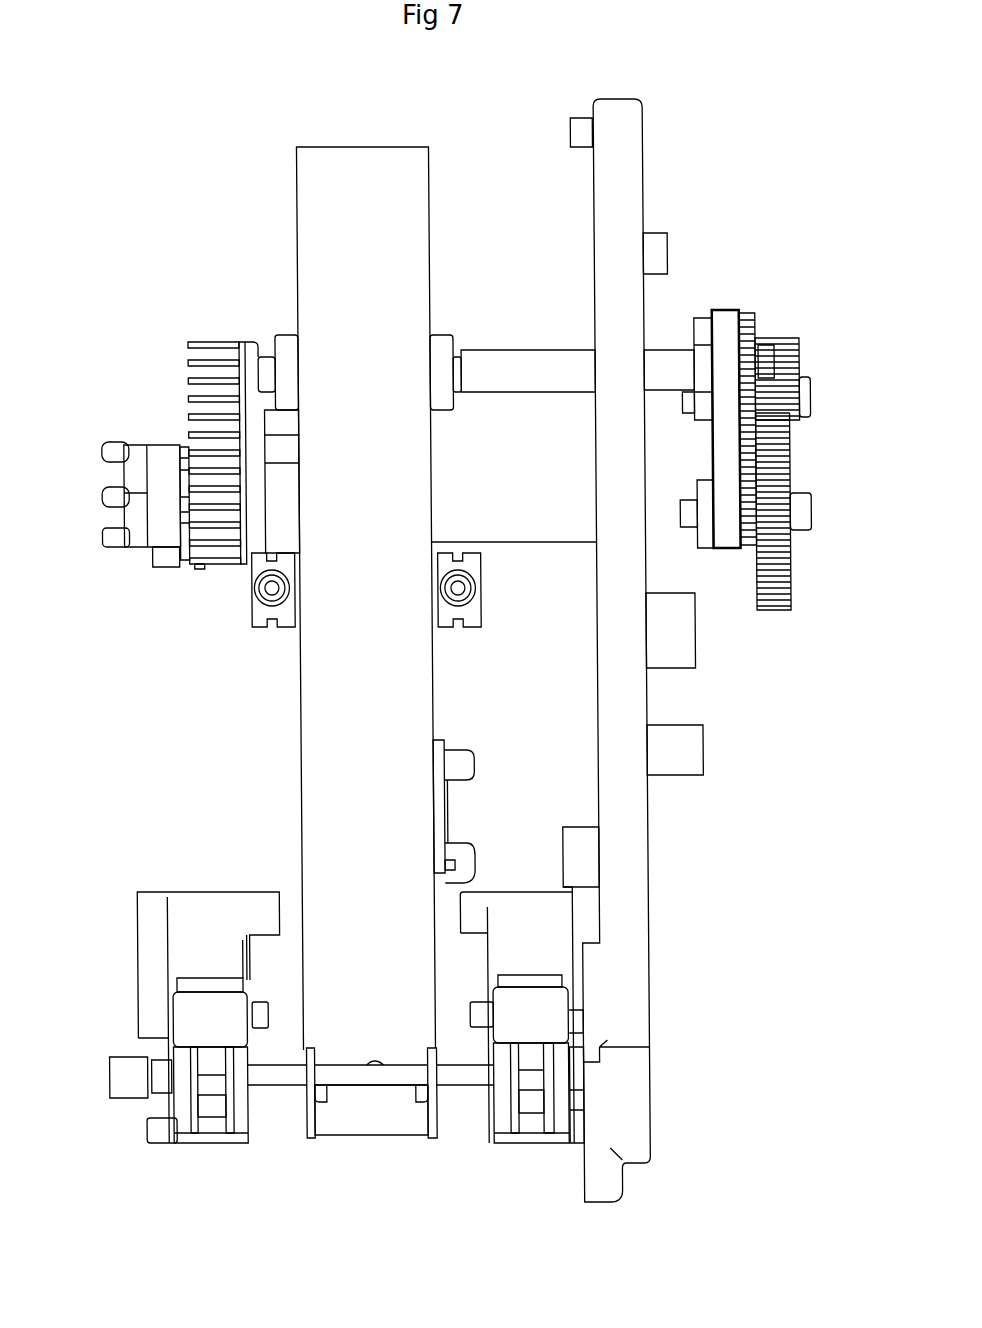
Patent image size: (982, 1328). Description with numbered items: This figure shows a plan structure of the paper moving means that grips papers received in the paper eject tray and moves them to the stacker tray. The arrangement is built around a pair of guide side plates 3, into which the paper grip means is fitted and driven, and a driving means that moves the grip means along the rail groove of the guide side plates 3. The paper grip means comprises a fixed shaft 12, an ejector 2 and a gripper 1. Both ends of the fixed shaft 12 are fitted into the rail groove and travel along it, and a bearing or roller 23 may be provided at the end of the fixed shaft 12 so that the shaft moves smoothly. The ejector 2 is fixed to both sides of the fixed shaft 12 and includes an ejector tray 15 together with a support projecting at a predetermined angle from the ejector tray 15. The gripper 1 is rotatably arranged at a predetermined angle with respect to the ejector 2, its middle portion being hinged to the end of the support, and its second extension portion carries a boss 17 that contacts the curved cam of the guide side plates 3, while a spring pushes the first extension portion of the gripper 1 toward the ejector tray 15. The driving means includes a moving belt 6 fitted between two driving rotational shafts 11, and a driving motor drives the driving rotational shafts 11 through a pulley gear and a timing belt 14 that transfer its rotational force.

The gripper 1 is at (172, 1019).
The ejector 2 is at (193, 926).
The guide side plates 3 is at (630, 605).
The moving belt 6 is at (356, 160).
The driving rotational shafts 11 is at (670, 358).
The fixed shaft 12 is at (368, 1077).
The timing belt 14 is at (728, 488).
The ejector tray 15 is at (220, 958).
The boss 17 is at (158, 1135).
The bearing or roller 23 is at (116, 1083).